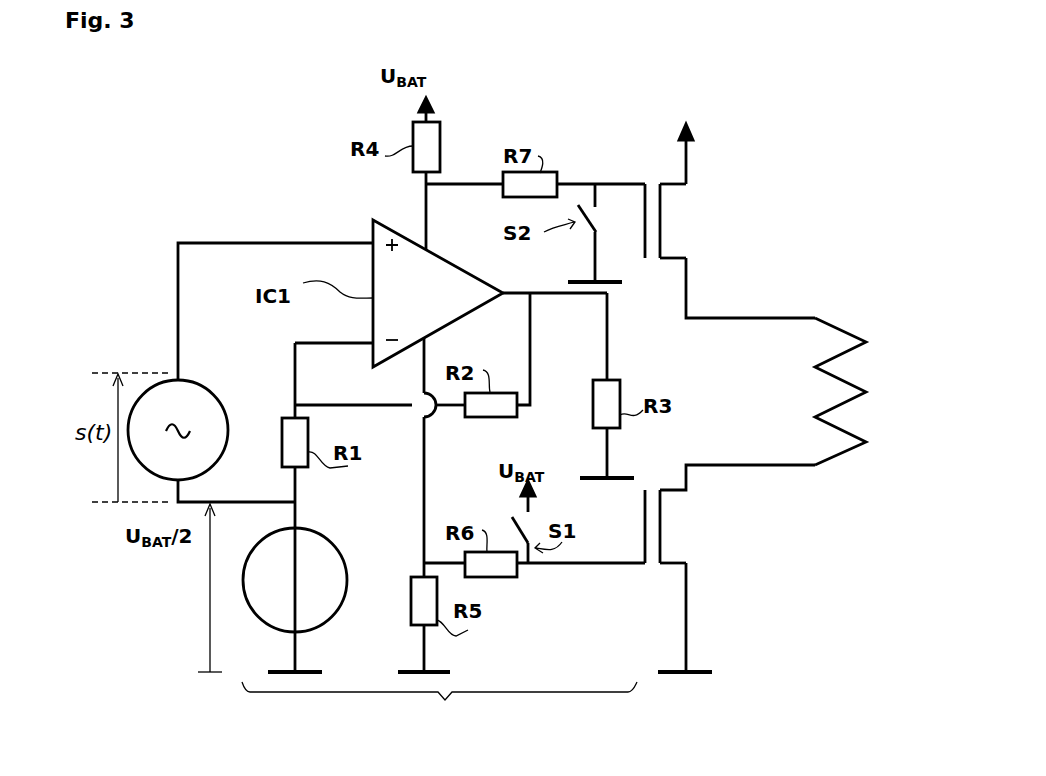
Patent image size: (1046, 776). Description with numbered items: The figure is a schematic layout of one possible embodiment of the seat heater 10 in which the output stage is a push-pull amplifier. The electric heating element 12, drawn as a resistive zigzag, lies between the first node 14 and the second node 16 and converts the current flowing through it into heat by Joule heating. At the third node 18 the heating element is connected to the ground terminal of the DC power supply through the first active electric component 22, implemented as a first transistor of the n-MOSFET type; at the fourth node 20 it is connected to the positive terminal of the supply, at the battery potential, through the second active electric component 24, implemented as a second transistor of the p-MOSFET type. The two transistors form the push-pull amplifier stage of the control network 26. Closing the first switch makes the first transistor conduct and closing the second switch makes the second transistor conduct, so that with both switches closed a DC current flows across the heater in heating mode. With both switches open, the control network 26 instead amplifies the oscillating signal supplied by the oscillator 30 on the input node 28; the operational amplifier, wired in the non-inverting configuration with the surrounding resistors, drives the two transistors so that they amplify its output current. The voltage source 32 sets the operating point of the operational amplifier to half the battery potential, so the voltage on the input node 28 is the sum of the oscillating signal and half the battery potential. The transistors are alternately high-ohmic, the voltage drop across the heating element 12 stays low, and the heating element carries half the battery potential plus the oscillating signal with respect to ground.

The seat heater 10 is at (172, 160).
The electric heating element 12 is at (822, 372).
The first node 14 is at (715, 465).
The second node 16 is at (713, 320).
The third node 18 is at (686, 606).
The fourth node 20 is at (686, 162).
The first active electric component 22 is at (637, 578).
The second active electric component 24 is at (637, 170).
The control network 26 is at (439, 714).
The input node 28 is at (243, 242).
The oscillator 30 is at (214, 380).
The voltage source 32 is at (325, 530).